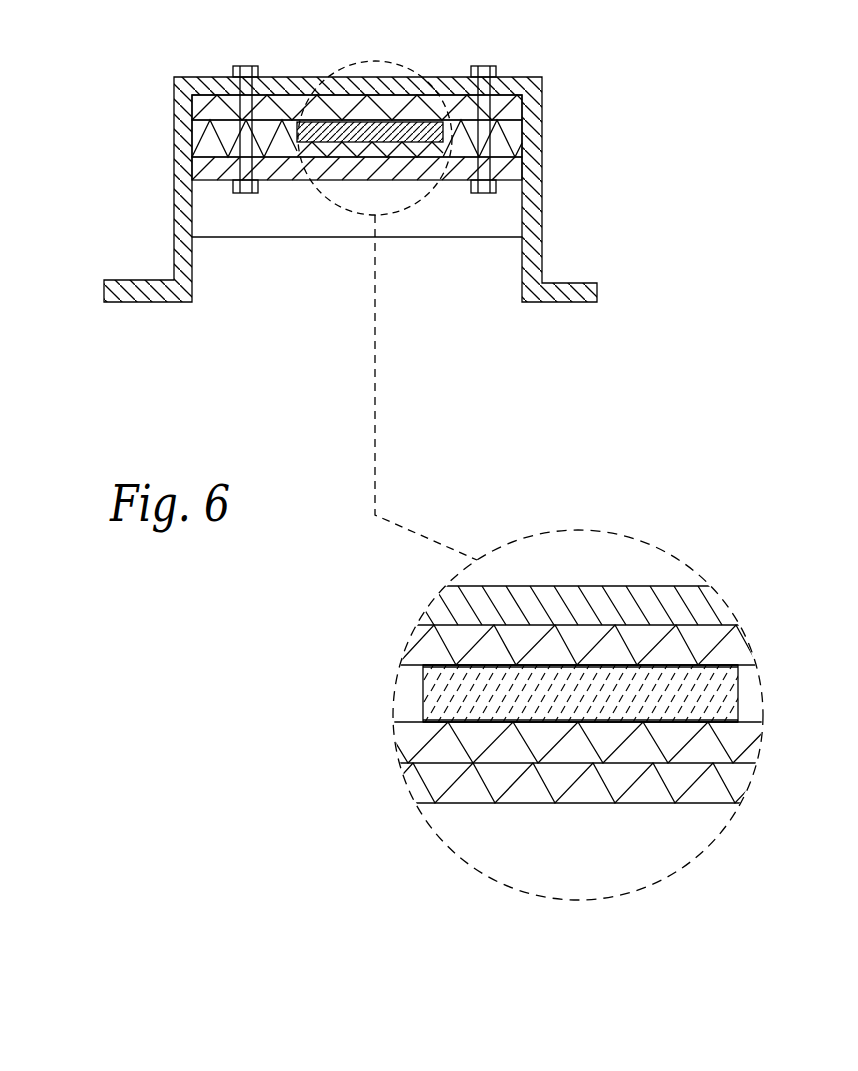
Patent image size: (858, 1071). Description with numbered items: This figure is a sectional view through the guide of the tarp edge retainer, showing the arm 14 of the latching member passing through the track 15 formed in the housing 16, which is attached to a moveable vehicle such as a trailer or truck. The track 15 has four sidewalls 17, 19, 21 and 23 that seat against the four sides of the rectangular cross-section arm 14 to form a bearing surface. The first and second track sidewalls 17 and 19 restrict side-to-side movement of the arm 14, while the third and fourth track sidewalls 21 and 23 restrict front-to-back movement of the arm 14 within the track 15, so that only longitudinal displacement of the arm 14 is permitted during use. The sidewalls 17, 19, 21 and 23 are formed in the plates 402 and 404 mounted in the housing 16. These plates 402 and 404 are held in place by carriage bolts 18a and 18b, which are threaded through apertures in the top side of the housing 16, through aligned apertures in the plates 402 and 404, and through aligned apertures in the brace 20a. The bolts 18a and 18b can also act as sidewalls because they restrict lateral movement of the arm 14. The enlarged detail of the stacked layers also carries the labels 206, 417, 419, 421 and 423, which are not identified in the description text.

The arm 14 is at (377, 131).
The track 15 is at (746, 603).
The housing 16 is at (537, 265).
The first track sidewall 17 is at (583, 674).
The carriage bolt 18a is at (487, 66).
The carriage bolt 18b is at (257, 66).
The second track sidewall 19 is at (732, 692).
The brace 20a is at (260, 193).
The third track sidewall 21 is at (581, 708).
The fourth track sidewall 23 is at (436, 704).
The base plate 206 is at (692, 787).
The plate 402 is at (510, 107).
The plate 404 is at (510, 148).
The upper conductive layer 417 is at (640, 665).
The lower conductive layer 419 is at (740, 710).
The lower adhesive layer 421 is at (490, 723).
The upper adhesive layer 423 is at (410, 665).